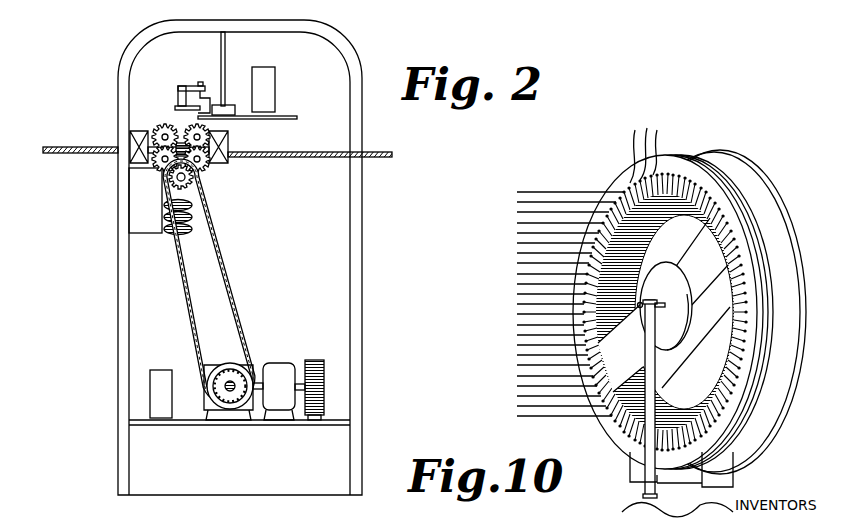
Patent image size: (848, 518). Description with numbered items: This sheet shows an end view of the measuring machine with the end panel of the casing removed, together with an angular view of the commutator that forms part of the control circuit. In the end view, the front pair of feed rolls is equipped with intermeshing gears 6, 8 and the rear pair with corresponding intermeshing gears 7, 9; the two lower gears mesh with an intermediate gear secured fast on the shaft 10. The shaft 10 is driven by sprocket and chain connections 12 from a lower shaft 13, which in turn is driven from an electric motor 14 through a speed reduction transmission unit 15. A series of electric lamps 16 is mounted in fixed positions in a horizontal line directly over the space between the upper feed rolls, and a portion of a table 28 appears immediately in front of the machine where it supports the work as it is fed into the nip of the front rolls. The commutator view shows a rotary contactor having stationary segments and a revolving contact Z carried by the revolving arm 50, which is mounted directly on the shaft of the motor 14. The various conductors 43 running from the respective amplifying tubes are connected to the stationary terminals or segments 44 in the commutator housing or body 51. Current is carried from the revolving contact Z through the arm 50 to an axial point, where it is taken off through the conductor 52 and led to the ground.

In FIG. 2, the gear 6 is at (163, 125).
In FIG. 2, the gear 7 is at (200, 127).
In FIG. 2, the gear 8 is at (157, 163).
In FIG. 2, the gear 9 is at (202, 165).
In FIG. 2, the shaft 10 is at (187, 181).
In FIG. 2, the sprocket and chain connections 12 is at (221, 284).
In FIG. 2, the lower shaft 13 is at (230, 392).
In FIG. 2, the electric motor 14 is at (282, 368).
In FIG. 2, the speed reduction transmission unit 15 is at (253, 365).
In FIG. 2, the electric lamps 16 is at (178, 86).
In FIG. 2, the table 28 is at (62, 147).
In FIG. 10, the conductor 43 is at (517, 202).
In FIG. 10, the stationary terminal 44 is at (665, 289).
In FIG. 10, the revolving arm 50 is at (688, 252).
In FIG. 2, the commutator housing 51 is at (315, 362).
In FIG. 10, the commutator housing 51 is at (753, 187).
In FIG. 10, the conductor 52 is at (660, 380).
In FIG. 10, the revolving contact Z is at (609, 368).